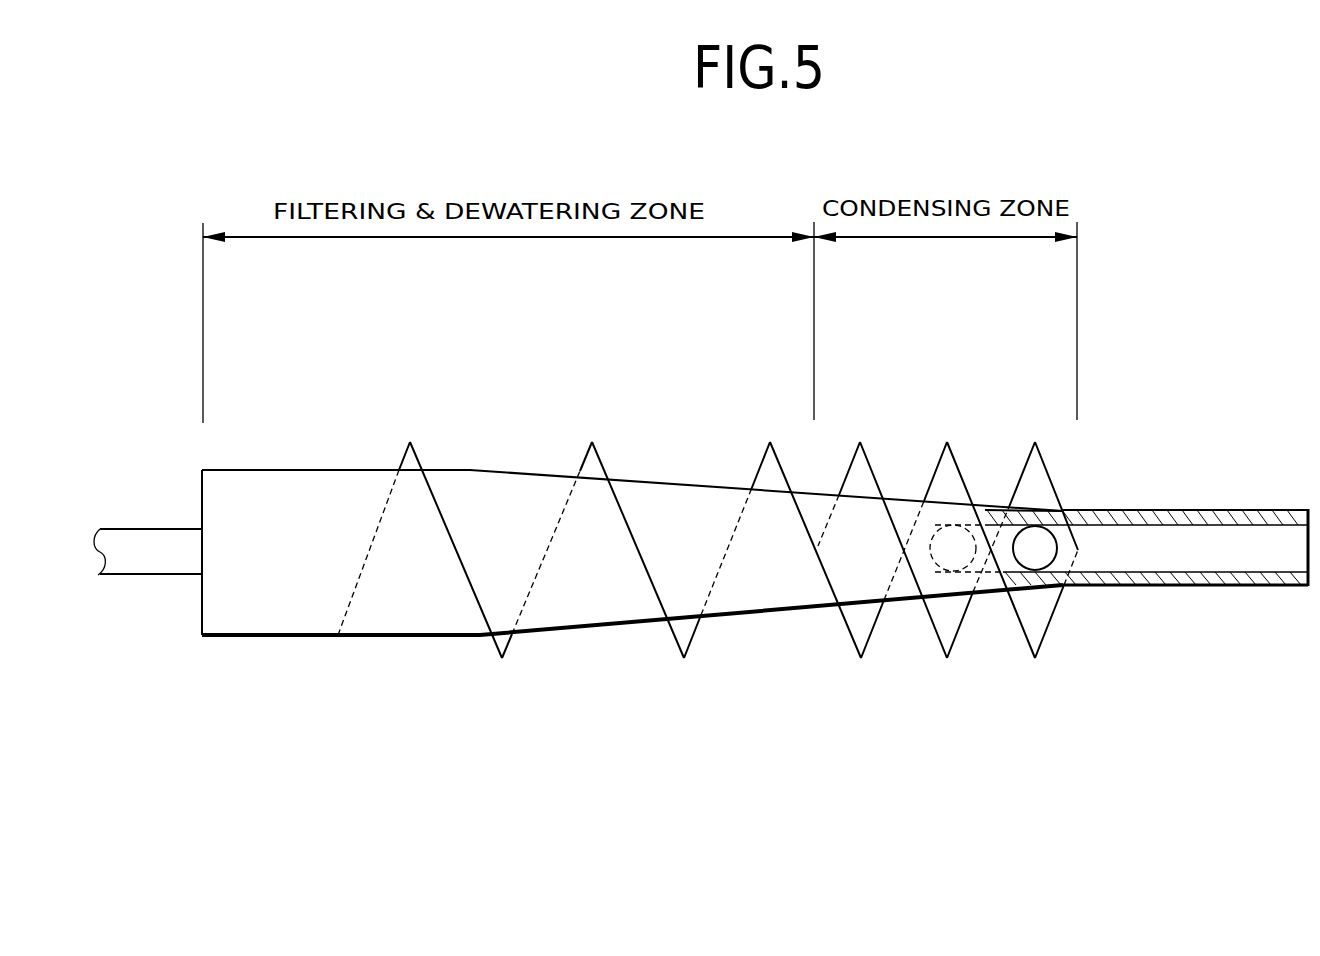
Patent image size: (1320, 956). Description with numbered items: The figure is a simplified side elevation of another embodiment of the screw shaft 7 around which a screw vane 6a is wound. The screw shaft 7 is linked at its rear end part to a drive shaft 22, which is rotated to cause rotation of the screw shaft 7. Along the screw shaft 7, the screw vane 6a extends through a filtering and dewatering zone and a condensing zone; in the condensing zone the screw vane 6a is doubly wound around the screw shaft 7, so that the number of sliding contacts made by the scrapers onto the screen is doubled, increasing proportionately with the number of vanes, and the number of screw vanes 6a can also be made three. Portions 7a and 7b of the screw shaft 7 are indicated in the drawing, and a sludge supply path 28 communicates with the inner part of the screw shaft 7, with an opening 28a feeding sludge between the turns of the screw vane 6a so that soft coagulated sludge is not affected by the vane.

The screw shaft 7 is at (675, 472).
The condensing portion of screw 7a is at (912, 497).
The filtering and dewatering portion of screw 7b is at (557, 602).
The screw vane 6a is at (430, 487).
The drive shaft 22 is at (149, 555).
The sludge supply path 28 is at (1163, 550).
The discharge opening 28a is at (1040, 550).